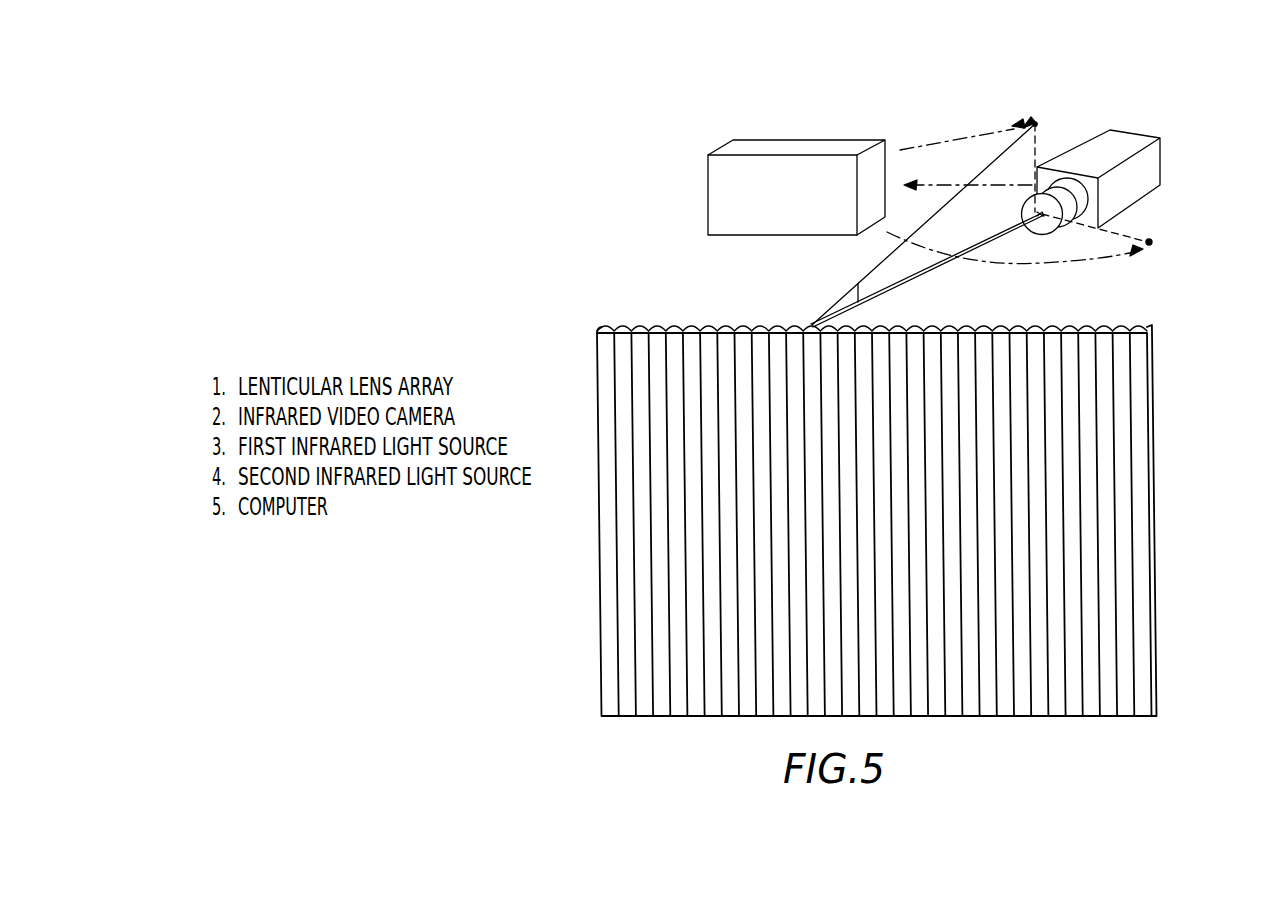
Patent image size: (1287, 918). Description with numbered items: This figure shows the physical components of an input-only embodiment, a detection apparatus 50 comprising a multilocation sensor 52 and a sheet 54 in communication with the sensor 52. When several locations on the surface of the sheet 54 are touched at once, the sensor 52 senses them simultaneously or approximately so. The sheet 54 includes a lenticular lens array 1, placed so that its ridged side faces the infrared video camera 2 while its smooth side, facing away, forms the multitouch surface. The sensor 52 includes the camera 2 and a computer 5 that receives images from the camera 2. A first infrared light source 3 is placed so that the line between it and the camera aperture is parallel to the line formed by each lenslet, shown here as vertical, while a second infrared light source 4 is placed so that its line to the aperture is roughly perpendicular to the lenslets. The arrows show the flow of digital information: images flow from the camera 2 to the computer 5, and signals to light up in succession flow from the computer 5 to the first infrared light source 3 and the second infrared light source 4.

The lenticular lens array 1 is at (877, 520).
The infrared video camera 2 is at (1135, 193).
The first infrared light source 3 is at (1036, 123).
The second infrared light source 4 is at (1150, 242).
The computer 5 is at (786, 195).
The detection apparatus 50 is at (536, 605).
The multilocation sensor 52 is at (1177, 136).
The sheet 54 is at (1154, 491).